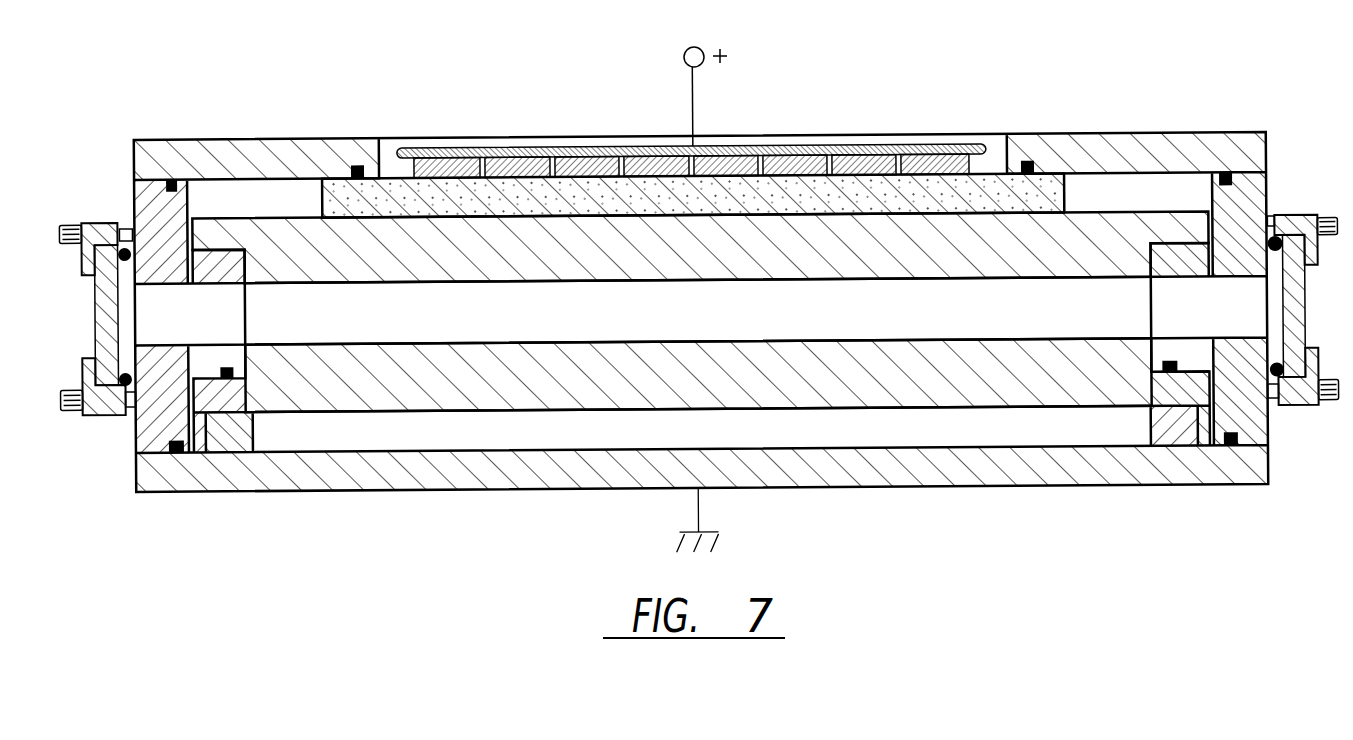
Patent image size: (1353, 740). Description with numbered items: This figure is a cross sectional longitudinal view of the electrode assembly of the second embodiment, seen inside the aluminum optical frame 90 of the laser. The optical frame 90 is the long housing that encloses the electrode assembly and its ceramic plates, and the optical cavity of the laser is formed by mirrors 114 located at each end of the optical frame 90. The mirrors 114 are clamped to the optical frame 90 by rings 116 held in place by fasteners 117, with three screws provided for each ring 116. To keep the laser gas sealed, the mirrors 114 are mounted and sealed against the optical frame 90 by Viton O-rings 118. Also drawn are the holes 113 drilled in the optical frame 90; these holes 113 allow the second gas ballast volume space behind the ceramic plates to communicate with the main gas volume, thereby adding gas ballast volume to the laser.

The optical frame 90 is at (156, 447).
The holes 113 is at (213, 262).
The mirrors 114 is at (112, 416).
The rings 116 is at (102, 223).
The fasteners 117 is at (78, 222).
The Viton O-rings 118 is at (121, 242).